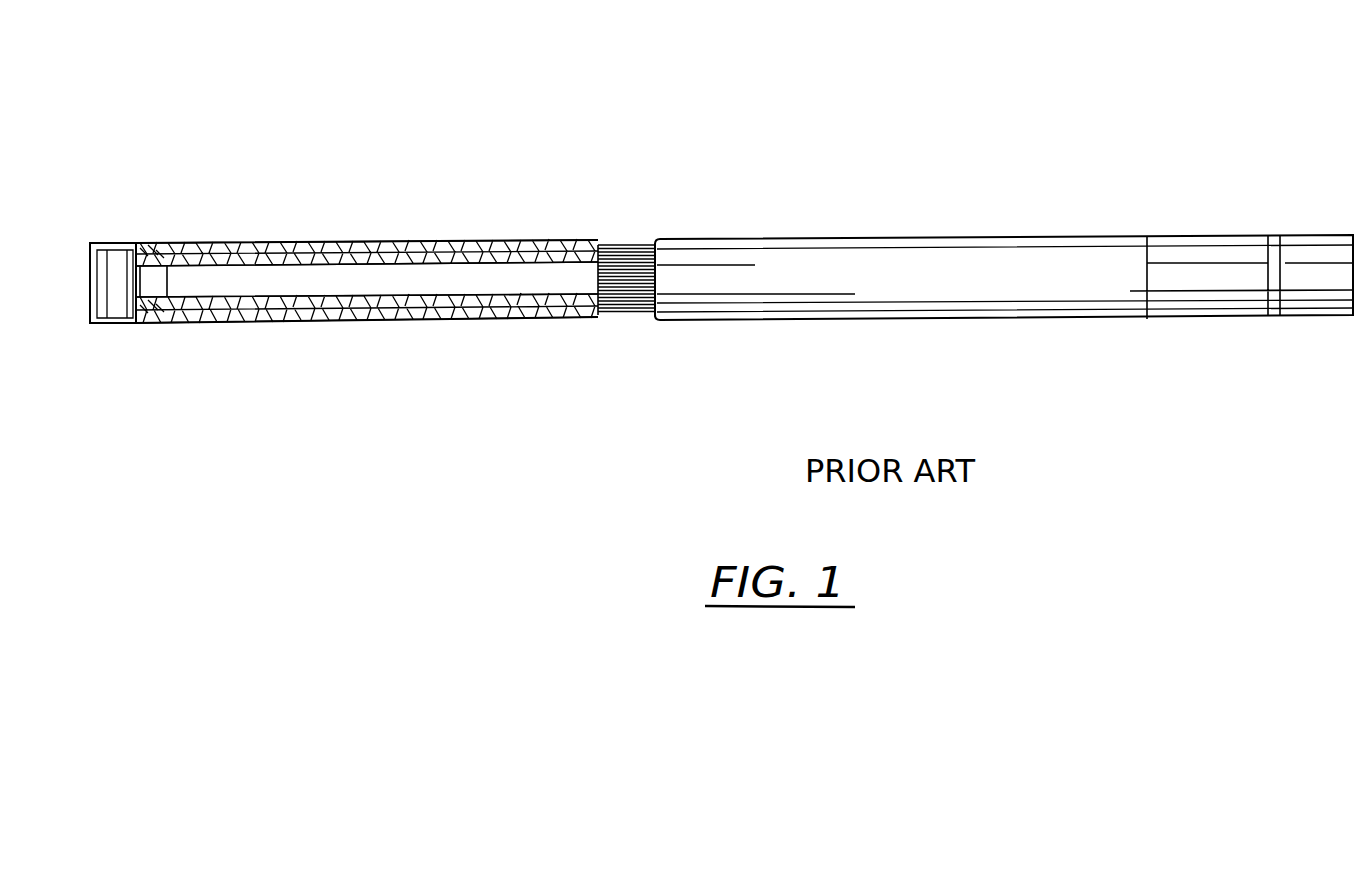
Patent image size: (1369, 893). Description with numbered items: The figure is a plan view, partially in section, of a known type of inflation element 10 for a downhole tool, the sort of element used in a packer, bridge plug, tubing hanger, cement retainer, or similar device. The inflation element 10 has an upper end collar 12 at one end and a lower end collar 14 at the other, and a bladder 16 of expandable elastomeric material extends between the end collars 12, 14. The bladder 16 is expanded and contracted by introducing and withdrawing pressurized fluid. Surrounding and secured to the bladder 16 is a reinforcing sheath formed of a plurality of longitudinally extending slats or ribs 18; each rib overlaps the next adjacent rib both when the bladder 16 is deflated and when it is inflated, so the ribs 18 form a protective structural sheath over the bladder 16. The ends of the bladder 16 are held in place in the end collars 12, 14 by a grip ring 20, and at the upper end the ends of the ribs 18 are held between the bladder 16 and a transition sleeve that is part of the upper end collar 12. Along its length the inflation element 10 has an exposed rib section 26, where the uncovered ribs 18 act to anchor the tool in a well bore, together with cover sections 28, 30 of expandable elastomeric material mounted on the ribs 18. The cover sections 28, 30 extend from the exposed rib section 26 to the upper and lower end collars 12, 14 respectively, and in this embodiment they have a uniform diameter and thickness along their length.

The inflation element 10 is at (567, 178).
The upper end collar 12 is at (312, 210).
The lower end collar 14 is at (1236, 206).
The bladder 16 is at (555, 305).
The ribs 18 is at (545, 243).
The grip ring 20 is at (137, 322).
The exposed rib section 26 is at (608, 232).
The cover section 28 is at (393, 235).
The cover section 30 is at (745, 237).